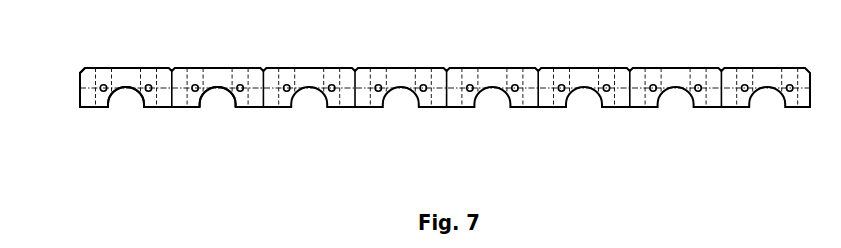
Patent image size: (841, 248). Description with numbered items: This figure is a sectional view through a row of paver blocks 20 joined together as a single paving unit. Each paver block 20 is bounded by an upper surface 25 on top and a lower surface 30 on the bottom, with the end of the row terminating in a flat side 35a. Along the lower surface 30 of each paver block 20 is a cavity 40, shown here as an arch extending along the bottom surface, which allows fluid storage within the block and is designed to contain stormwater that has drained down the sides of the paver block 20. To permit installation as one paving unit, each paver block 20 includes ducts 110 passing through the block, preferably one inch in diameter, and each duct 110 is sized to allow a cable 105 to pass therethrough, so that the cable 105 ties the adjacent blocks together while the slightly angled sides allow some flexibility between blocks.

The paver block 20 is at (580, 78).
The upper surface 25 is at (127, 68).
The lower surface 30 is at (250, 108).
The flat side 35a is at (80, 85).
The cavity 40 is at (207, 109).
The cable 105 is at (422, 84).
The duct 110 is at (330, 85).